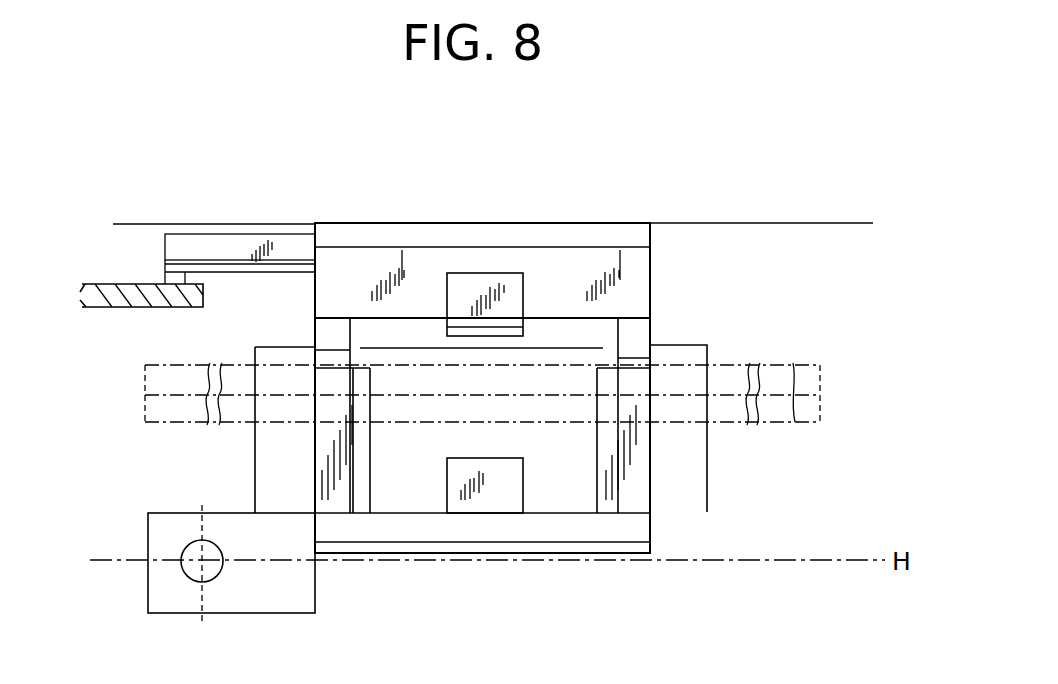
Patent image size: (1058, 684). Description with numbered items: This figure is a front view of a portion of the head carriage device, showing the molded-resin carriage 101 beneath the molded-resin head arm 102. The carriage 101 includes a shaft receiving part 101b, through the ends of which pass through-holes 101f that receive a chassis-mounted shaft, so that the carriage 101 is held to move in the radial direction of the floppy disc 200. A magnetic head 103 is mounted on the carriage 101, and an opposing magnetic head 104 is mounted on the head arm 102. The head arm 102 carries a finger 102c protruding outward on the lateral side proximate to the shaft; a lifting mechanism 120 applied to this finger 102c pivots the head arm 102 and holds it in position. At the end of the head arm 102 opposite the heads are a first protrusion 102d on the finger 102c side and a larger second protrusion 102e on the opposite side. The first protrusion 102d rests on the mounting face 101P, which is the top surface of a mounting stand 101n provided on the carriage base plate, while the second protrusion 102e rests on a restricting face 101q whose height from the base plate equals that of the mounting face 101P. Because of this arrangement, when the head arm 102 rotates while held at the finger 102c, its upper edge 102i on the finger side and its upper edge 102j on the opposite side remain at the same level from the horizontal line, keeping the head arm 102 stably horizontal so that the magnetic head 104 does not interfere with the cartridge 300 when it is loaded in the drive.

The carriage 101 is at (653, 528).
The shaft receiving part 101b is at (172, 522).
The through-hole 101f is at (188, 580).
The mounting stand 101n is at (355, 480).
The mounting face 101P is at (362, 367).
The restricting face 101q is at (603, 367).
The head arm 102 is at (637, 260).
The finger 102c is at (247, 252).
The first protrusion 102d is at (333, 350).
The second protrusion 102e is at (633, 358).
The upper edge 102i is at (182, 226).
The upper edge 102j is at (791, 228).
The magnetic head 103 is at (503, 490).
The magnetic head 104 is at (480, 290).
The lifting mechanism 120 is at (97, 313).
The floppy disc 200 is at (795, 422).
The cartridge 300 is at (793, 363).